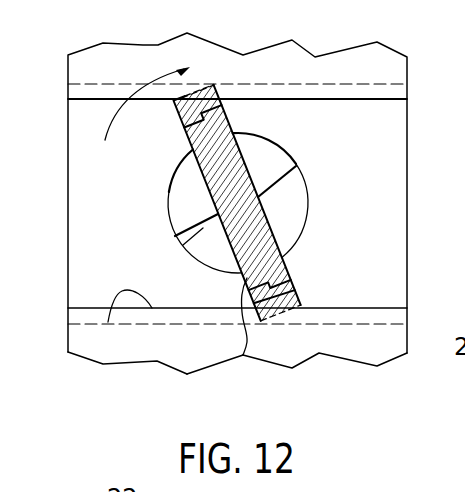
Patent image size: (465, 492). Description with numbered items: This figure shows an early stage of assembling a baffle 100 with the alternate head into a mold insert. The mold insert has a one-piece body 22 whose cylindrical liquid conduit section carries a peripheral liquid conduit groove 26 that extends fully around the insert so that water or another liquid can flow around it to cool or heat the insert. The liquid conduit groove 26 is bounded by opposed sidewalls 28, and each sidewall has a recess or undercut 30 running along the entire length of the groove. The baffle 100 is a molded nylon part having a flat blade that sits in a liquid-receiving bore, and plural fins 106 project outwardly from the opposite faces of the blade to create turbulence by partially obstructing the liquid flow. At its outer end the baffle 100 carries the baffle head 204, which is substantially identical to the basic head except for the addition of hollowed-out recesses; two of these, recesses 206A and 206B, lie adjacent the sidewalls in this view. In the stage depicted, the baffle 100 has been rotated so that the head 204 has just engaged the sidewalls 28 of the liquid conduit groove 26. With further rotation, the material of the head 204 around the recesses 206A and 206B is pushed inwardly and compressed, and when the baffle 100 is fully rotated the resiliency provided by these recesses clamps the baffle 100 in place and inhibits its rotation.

The one-piece body 22 is at (127, 60).
The liquid conduit groove 26 is at (100, 254).
The sidewalls 28 is at (108, 322).
The recess or undercut 30 is at (360, 326).
The baffle 100 is at (292, 322).
The fins 106 is at (282, 199).
The baffle head 204 is at (216, 187).
The recess 206A is at (221, 86).
The recess 206B is at (245, 355).